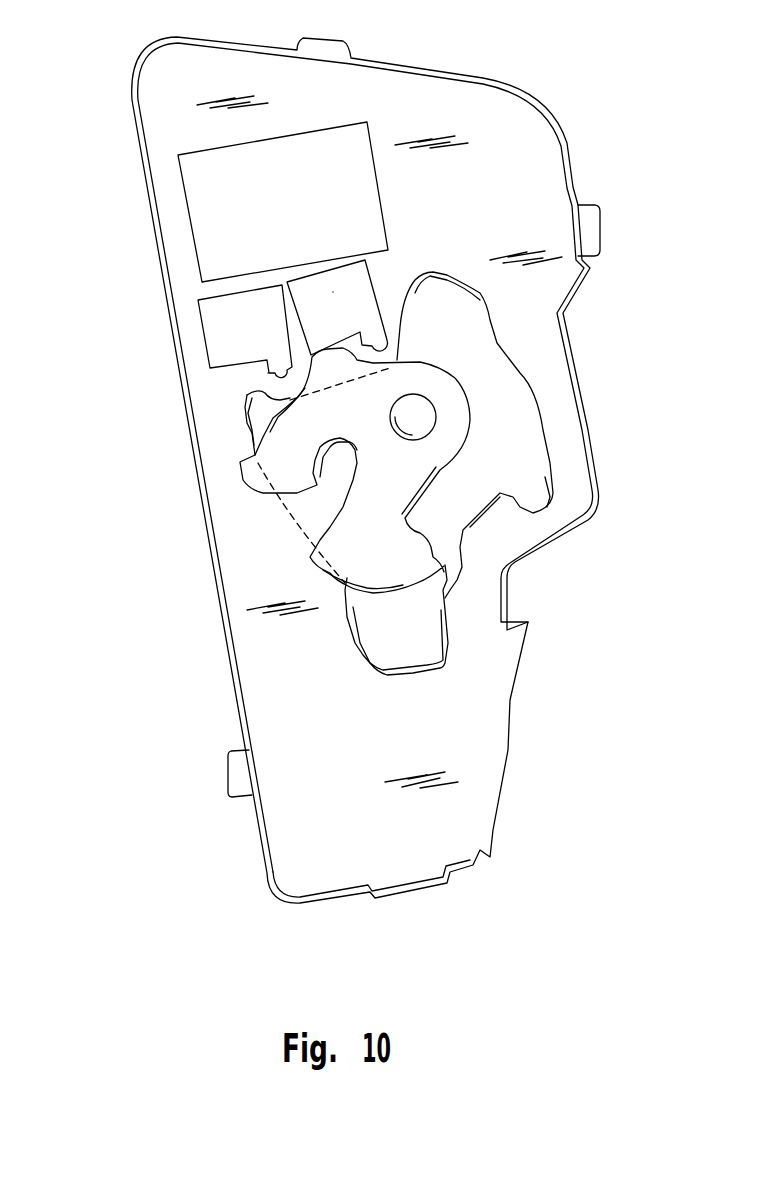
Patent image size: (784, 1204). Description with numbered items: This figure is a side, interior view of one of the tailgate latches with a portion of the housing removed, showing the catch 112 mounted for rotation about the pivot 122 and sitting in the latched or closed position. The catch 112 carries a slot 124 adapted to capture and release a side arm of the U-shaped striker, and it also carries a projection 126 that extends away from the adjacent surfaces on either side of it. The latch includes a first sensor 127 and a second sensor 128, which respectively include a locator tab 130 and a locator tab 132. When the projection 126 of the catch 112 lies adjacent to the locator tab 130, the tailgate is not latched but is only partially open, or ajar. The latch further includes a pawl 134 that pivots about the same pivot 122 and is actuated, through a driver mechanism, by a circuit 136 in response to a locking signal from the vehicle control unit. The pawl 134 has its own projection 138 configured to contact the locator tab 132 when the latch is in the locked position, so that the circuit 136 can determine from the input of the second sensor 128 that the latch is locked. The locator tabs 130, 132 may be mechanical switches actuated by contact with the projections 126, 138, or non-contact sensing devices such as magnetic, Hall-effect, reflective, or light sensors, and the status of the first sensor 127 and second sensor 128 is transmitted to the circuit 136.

The catch 112 is at (395, 541).
The pivot 122 is at (420, 420).
The slot 124 is at (328, 493).
The projection 126 is at (300, 360).
The first sensor 127 is at (333, 292).
The second sensor 128 is at (217, 312).
The locator tab 130 is at (393, 363).
The locator tab 132 is at (269, 373).
The pawl 134 is at (373, 632).
The circuit 136 is at (230, 210).
The projection 138 is at (247, 394).